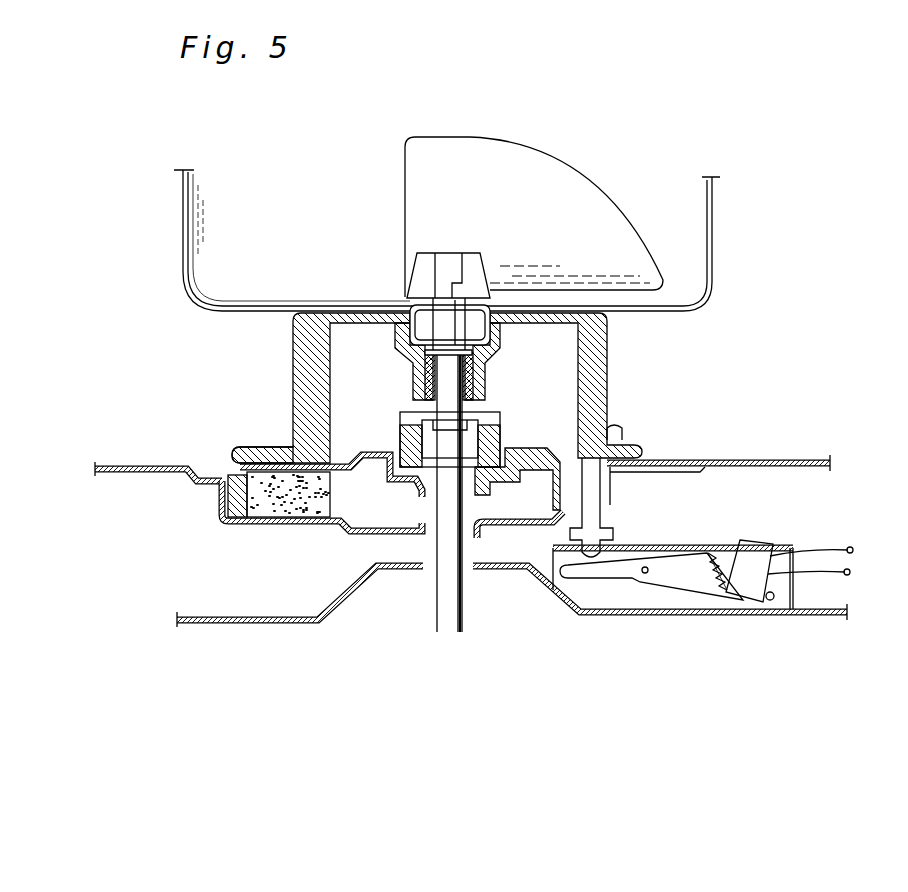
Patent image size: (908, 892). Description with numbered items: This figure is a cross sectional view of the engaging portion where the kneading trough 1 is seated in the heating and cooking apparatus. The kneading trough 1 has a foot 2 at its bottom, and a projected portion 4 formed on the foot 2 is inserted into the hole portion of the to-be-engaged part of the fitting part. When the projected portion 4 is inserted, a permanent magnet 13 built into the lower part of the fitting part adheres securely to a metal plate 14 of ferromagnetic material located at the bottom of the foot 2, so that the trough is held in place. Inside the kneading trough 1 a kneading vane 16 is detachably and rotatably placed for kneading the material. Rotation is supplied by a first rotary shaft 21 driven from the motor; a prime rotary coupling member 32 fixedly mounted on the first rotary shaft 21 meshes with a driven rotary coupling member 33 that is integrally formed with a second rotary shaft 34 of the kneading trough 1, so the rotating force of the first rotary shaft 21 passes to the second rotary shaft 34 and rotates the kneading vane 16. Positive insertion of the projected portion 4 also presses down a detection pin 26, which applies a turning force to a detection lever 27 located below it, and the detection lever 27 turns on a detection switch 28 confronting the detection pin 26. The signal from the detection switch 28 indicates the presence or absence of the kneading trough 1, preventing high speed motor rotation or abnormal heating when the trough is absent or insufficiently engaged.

The kneading trough 1 is at (183, 243).
The foot 2 is at (608, 360).
The projected portion 4 is at (642, 444).
The permanent magnet 13 is at (272, 497).
The metal plate 14 is at (262, 452).
The kneading vane 16 is at (598, 190).
The first rotary shaft 21 is at (445, 600).
The detection pin 26 is at (617, 527).
The detection lever 27 is at (590, 573).
The detection switch 28 is at (757, 560).
The prime rotary coupling member 32 is at (490, 456).
The driven rotary coupling member 33 is at (488, 420).
The second rotary shaft 34 is at (450, 384).